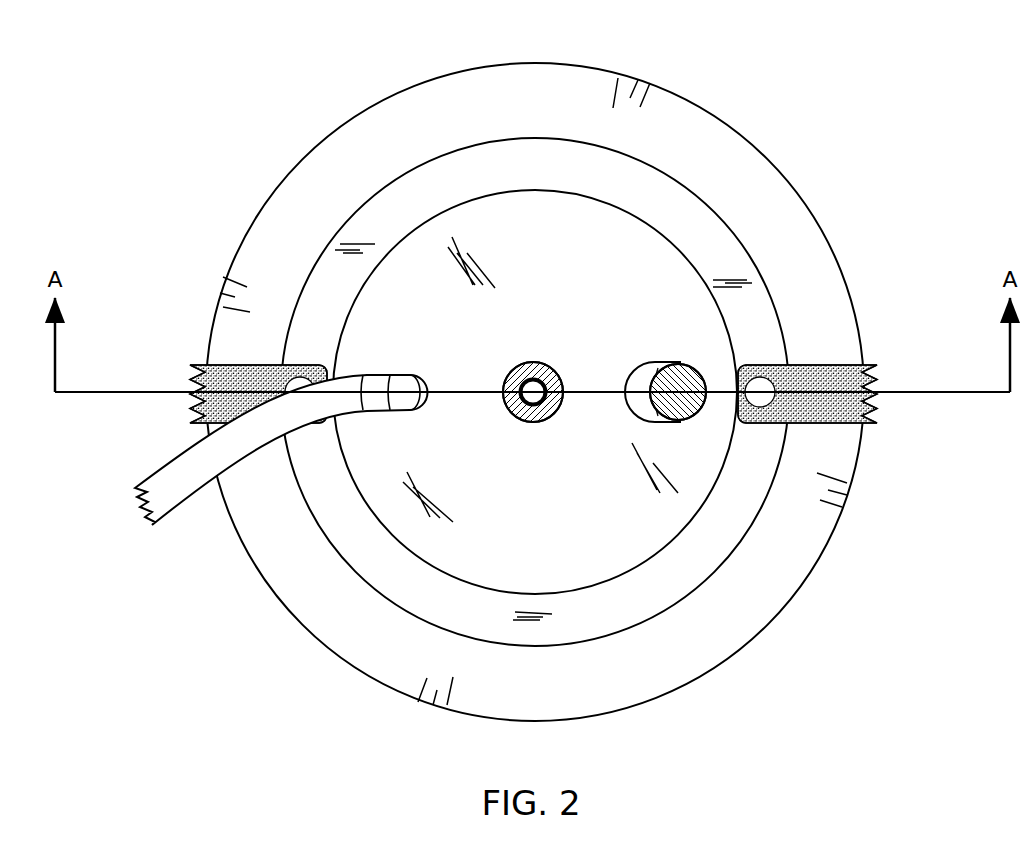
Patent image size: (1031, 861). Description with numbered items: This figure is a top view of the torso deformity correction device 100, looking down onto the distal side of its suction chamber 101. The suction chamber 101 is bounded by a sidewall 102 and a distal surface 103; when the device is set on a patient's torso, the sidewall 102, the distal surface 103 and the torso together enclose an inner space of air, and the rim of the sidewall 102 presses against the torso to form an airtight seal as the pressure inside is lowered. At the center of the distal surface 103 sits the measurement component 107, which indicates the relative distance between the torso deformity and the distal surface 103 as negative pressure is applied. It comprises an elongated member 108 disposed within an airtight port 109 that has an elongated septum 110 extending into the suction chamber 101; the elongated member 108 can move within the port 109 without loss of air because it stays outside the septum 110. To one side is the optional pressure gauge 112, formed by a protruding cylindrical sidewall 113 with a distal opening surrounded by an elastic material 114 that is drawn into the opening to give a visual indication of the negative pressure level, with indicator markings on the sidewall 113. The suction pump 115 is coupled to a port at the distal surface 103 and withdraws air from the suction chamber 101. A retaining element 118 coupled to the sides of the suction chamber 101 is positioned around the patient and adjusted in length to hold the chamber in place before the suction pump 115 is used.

The correction device 100 is at (198, 95).
The suction chamber 101 is at (777, 255).
The sidewall 102 is at (807, 303).
The distal surface 103 is at (563, 360).
The measurement component 107 is at (500, 372).
The elongated member 108 is at (537, 422).
The airtight port 109 is at (517, 363).
The septum 110 is at (520, 423).
The pressure gauge 112 is at (781, 317).
The cylindrical sidewall 113 is at (643, 405).
The elastic material 114 is at (678, 362).
The suction pump 115 is at (155, 488).
The retaining element 118 is at (222, 362).